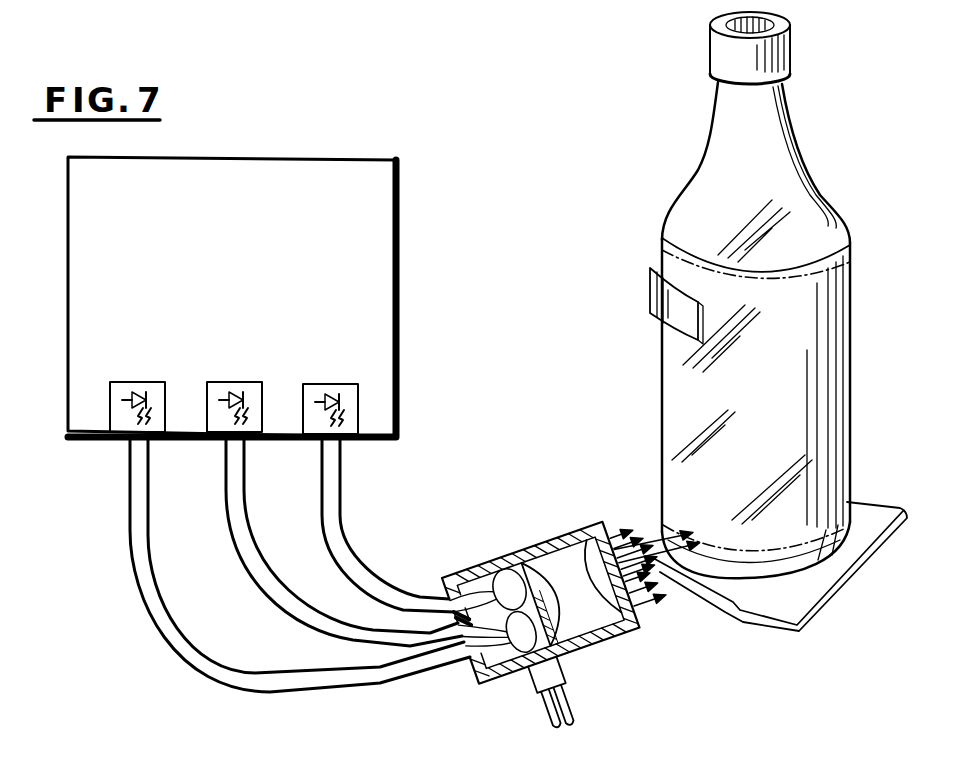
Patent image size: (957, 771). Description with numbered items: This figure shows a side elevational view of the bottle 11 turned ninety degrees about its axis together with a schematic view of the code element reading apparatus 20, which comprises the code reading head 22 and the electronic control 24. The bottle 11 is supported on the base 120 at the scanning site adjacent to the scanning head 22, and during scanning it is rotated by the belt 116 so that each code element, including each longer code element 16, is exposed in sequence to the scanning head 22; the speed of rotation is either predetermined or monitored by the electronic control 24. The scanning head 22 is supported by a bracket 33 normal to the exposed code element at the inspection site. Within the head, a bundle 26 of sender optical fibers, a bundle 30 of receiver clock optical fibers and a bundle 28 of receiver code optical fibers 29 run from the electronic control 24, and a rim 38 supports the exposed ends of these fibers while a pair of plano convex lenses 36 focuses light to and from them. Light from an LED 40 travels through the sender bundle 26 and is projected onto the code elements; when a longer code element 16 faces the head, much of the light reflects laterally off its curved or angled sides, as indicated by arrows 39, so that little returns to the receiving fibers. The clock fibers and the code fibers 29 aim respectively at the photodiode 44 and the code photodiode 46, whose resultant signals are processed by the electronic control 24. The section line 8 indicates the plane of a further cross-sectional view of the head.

The section line 8 is at (543, 497).
The bottle 11 is at (721, 295).
The longer code element 16 is at (664, 522).
The code element reading apparatus 20 is at (494, 386).
The code reading head 22 is at (487, 568).
The electronic control 24 is at (402, 267).
The bundle of sender optical fibers 26 is at (150, 528).
The bundle of receiver code optical fibers 28 is at (344, 477).
The receiver code optical fiber 29 is at (735, 764).
The bundle of receiver clock optical fibers 30 is at (248, 470).
The bracket 33 is at (530, 684).
The plano convex lenses 36 is at (568, 564).
The rim 38 is at (527, 566).
The arrows 39 is at (672, 540).
The LED 40 is at (112, 405).
The photodiode 44 is at (208, 402).
The code photodiode 46 is at (358, 416).
The belt 116 is at (655, 268).
The base 120 is at (763, 580).